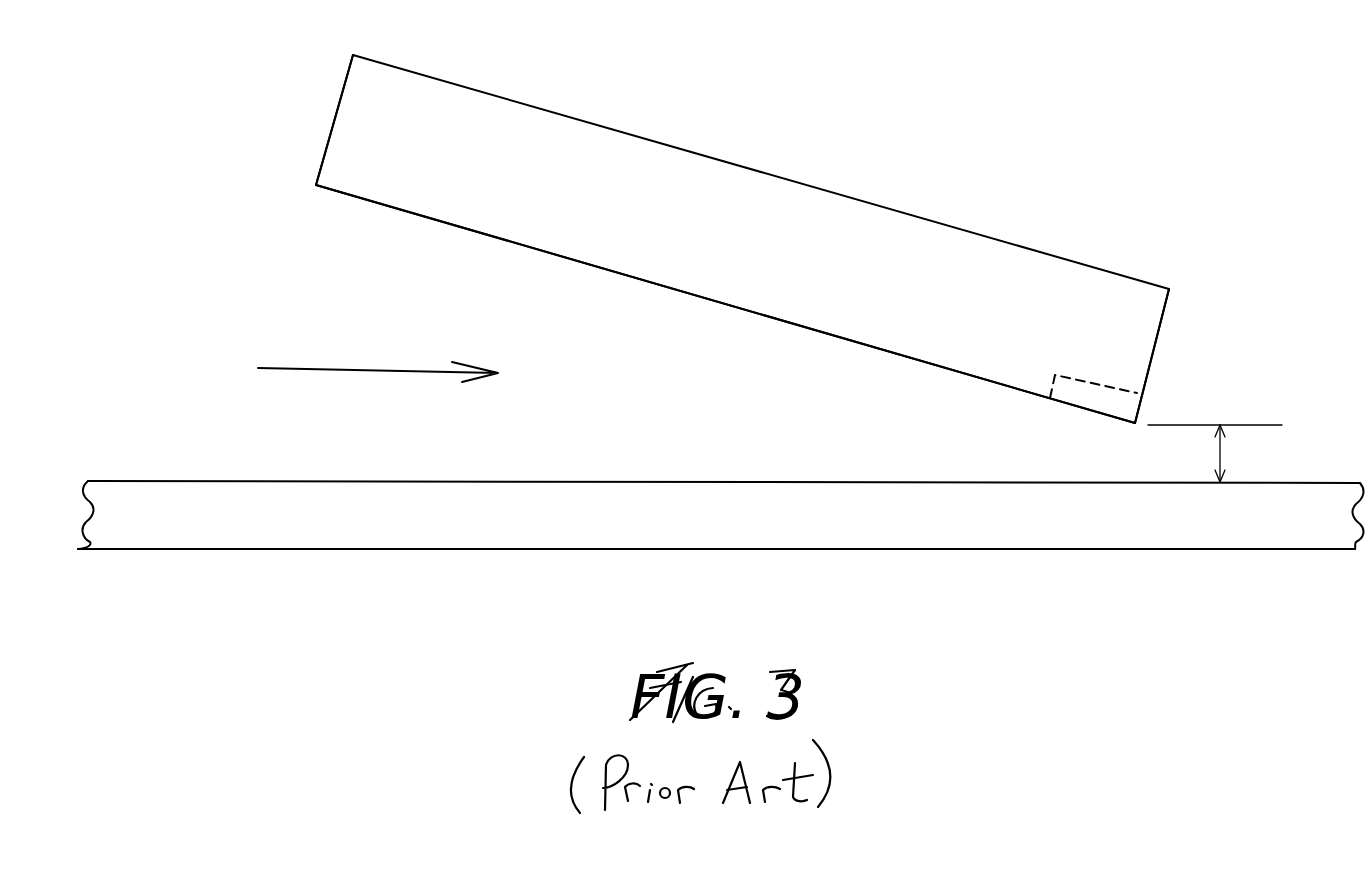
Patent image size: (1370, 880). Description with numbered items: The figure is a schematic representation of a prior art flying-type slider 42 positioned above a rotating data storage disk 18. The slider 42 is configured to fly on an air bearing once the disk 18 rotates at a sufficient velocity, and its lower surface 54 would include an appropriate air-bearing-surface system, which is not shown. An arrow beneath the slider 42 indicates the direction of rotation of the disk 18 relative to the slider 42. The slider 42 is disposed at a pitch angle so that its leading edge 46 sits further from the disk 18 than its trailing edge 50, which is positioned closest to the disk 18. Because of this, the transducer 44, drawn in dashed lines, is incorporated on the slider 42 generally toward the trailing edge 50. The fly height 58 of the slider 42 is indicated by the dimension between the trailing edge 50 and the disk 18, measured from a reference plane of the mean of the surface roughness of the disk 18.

The data storage disk 18 is at (385, 477).
The slider 42 is at (724, 269).
The transducer 44 is at (1088, 397).
The leading edge 46 is at (316, 185).
The trailing edge 50 is at (1135, 423).
The lower surface 54 is at (440, 225).
The fly height 58 is at (1222, 452).